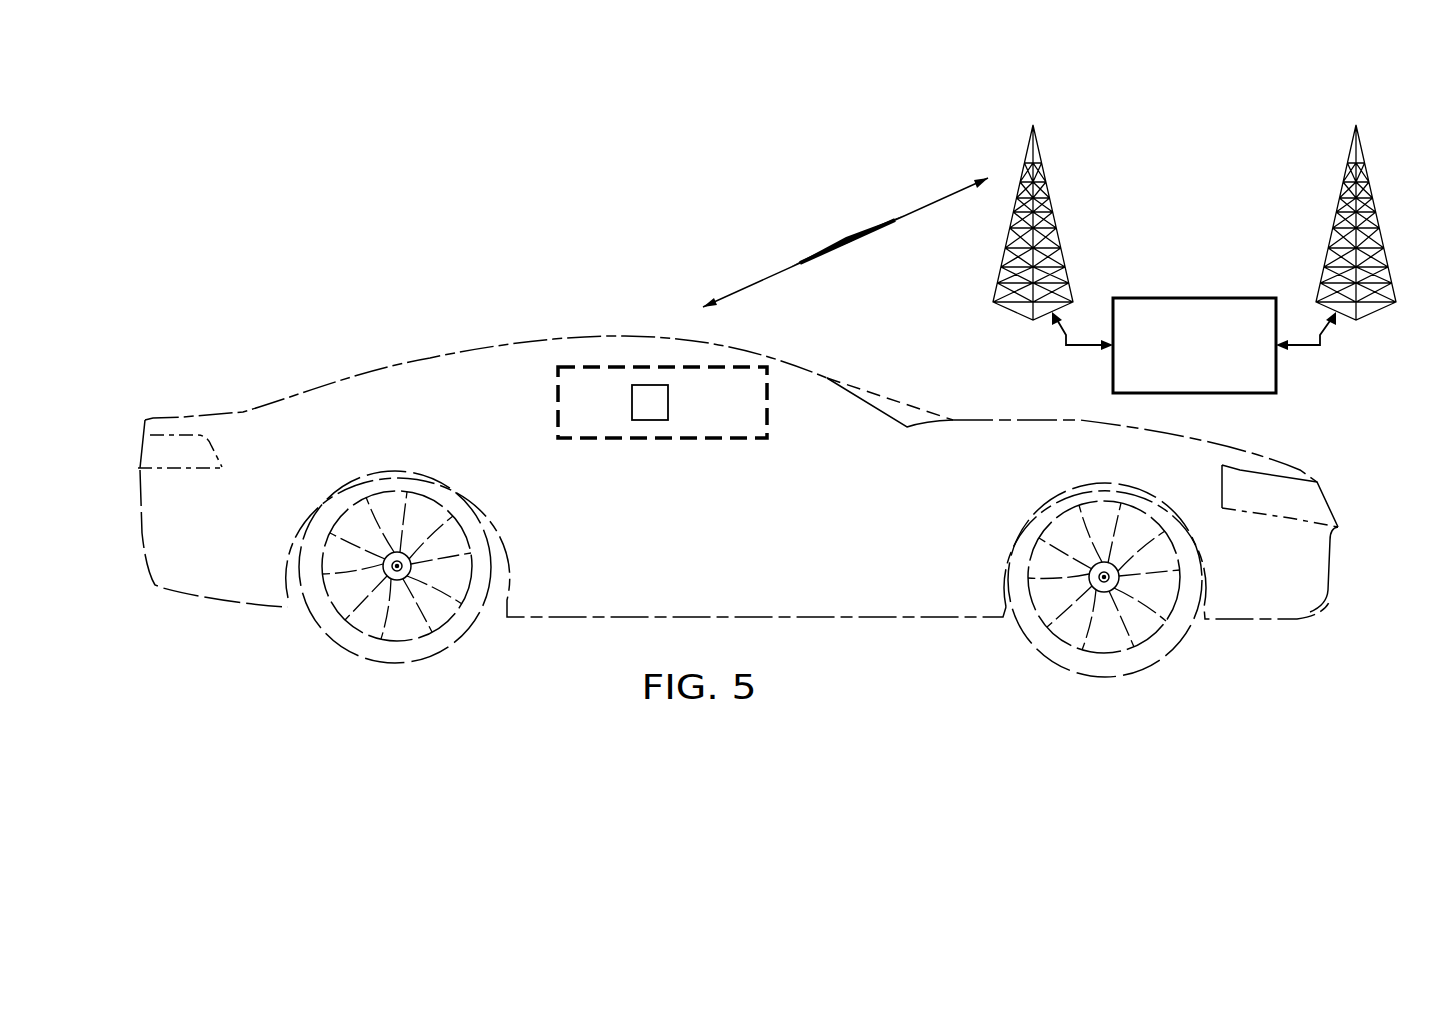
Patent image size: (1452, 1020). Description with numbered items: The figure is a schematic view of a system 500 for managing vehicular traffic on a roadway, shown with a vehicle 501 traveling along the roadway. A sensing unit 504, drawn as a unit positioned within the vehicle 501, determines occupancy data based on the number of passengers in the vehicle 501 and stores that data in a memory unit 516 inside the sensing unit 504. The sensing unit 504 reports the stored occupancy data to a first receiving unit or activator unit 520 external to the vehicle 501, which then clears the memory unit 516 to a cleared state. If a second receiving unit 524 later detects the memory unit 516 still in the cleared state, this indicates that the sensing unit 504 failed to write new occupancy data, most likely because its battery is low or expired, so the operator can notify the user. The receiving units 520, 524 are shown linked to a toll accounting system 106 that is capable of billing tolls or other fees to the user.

The system for managing vehicular traffic 500 is at (416, 120).
The vehicle 501 is at (430, 355).
The sensing unit 504 is at (648, 438).
The memory unit 516 is at (668, 404).
The first receiving unit or activator unit 520 is at (1056, 224).
The second receiving unit 524 is at (1382, 223).
The toll accounting system 106 is at (1195, 298).